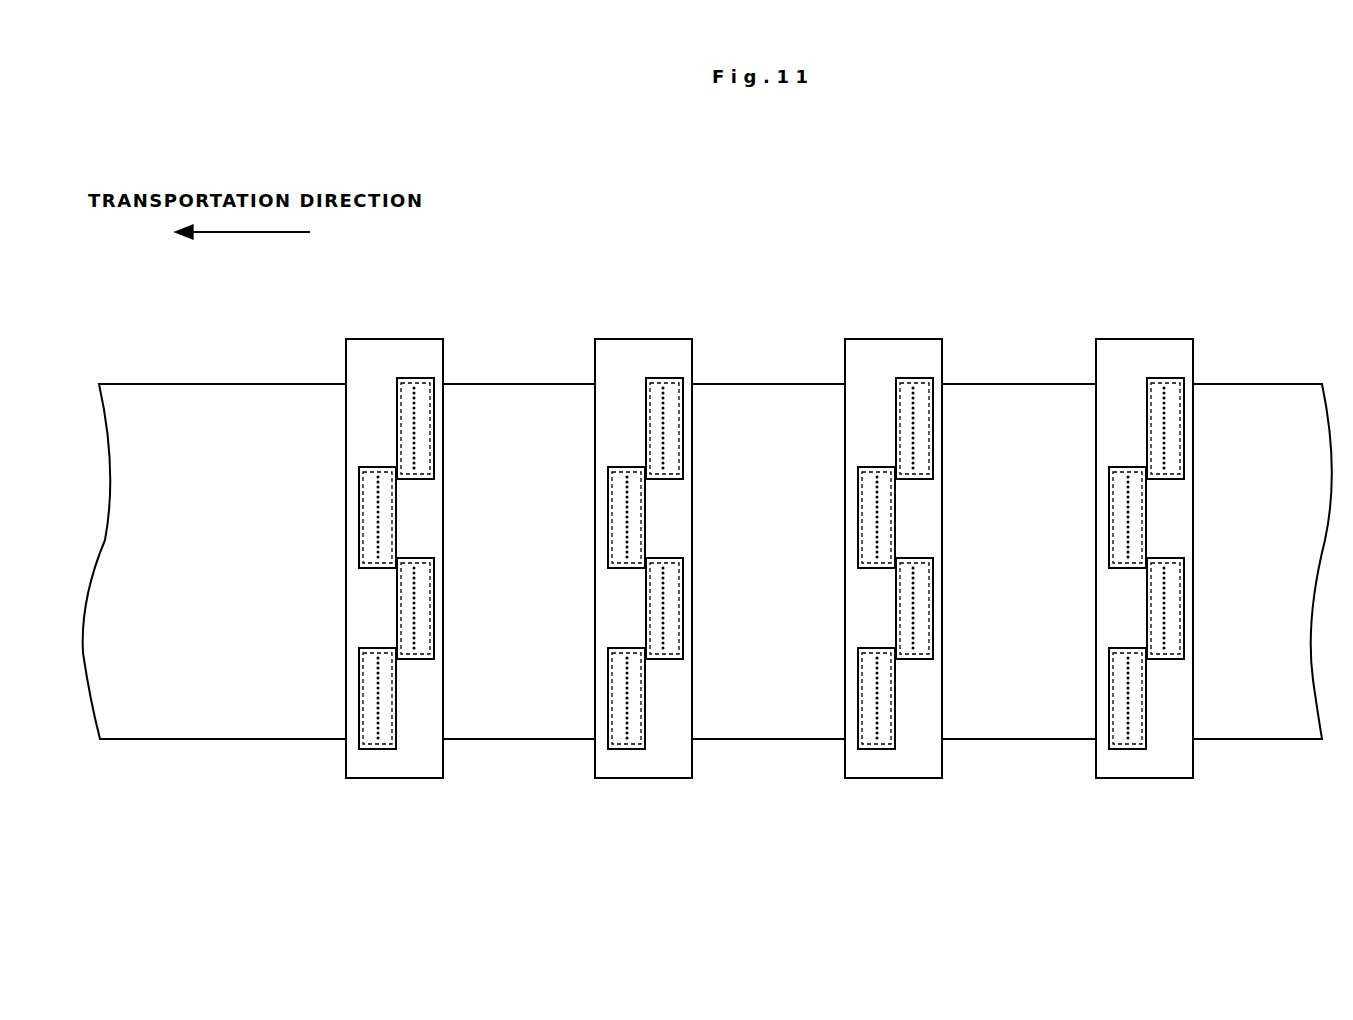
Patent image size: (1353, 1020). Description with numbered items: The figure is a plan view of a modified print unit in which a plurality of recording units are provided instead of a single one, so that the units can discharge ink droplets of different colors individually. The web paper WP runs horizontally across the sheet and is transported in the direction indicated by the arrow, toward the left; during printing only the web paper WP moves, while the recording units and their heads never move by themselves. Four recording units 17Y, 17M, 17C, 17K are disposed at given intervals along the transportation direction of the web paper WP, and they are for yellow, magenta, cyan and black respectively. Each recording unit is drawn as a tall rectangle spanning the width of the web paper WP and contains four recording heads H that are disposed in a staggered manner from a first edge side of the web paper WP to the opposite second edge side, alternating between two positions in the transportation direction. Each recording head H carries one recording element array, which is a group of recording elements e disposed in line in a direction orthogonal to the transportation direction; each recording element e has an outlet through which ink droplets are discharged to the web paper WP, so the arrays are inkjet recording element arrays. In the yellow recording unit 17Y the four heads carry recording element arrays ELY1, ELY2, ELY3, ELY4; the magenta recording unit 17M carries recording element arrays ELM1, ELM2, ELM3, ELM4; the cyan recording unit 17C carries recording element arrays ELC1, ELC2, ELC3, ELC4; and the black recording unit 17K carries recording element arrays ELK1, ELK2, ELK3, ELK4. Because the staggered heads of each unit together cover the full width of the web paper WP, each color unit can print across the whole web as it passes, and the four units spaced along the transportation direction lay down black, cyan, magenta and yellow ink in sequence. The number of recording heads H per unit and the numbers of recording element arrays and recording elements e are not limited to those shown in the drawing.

The web paper WP is at (172, 390).
The recording unit for yellow 17Y is at (360, 339).
The recording unit for magenta 17M is at (609, 339).
The recording unit for cyan 17C is at (859, 339).
The recording unit for black 17K is at (1110, 339).
The recording head H is at (434, 410).
The recording element e is at (414, 388).
The recording element array ELY1 is at (425, 440).
The recording element array ELY2 is at (368, 522).
The recording element array ELY3 is at (425, 620).
The recording element array ELY4 is at (368, 702).
The recording element array ELM1 is at (674, 440).
The recording element array ELM2 is at (617, 522).
The recording element array ELM3 is at (674, 620).
The recording element array ELM4 is at (617, 702).
The recording element array ELC1 is at (924, 440).
The recording element array ELC2 is at (867, 522).
The recording element array ELC3 is at (924, 620).
The recording element array ELC4 is at (867, 702).
The recording element array ELK1 is at (1175, 440).
The recording element array ELK2 is at (1118, 522).
The recording element array ELK3 is at (1175, 620).
The recording element array ELK4 is at (1118, 702).